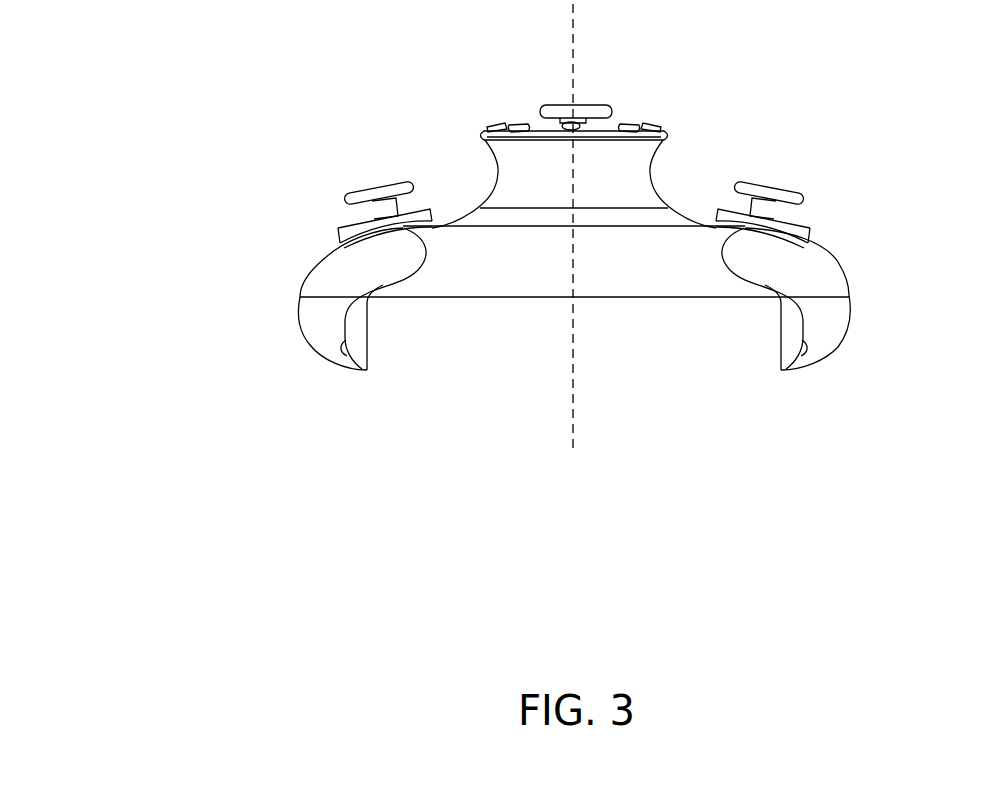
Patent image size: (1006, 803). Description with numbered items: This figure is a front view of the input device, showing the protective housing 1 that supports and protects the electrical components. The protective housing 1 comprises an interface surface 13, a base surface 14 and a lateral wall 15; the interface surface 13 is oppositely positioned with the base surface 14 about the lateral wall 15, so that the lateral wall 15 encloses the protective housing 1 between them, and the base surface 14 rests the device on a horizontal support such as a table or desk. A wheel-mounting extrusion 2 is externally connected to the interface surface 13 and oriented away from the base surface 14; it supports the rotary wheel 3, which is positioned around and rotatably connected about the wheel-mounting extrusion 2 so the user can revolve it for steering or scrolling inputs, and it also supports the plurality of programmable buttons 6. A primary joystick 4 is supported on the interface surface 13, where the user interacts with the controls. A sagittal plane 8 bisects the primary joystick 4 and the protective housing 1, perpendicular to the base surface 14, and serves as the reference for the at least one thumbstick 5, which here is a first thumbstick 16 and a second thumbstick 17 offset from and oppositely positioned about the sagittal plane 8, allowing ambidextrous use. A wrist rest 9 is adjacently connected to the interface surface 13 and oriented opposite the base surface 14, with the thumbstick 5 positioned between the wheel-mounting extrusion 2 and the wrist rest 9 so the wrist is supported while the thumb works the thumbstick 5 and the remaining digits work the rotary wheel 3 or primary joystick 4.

The protective housing 1 is at (175, 228).
The wheel-mounting extrusion 2 is at (537, 127).
The rotary wheel 3 is at (515, 175).
The primary joystick 4 is at (587, 110).
The thumbstick 5 is at (850, 98).
The programmable buttons 6 is at (498, 125).
The sagittal plane 8 is at (573, 420).
The wrist rest 9 is at (703, 243).
The interface surface 13 is at (335, 262).
The base surface 14 is at (442, 353).
The lateral wall 15 is at (307, 313).
The first thumbstick 16 is at (368, 198).
The second thumbstick 17 is at (772, 196).